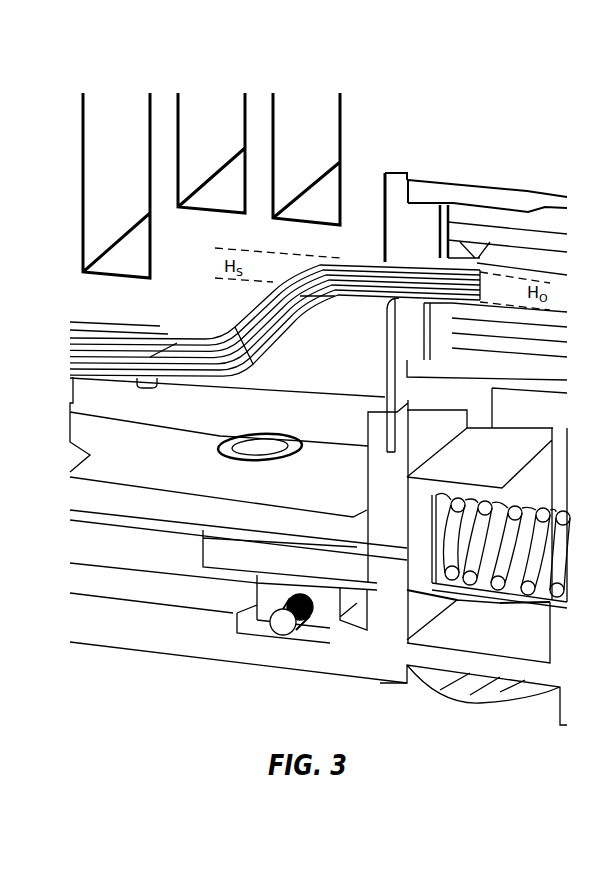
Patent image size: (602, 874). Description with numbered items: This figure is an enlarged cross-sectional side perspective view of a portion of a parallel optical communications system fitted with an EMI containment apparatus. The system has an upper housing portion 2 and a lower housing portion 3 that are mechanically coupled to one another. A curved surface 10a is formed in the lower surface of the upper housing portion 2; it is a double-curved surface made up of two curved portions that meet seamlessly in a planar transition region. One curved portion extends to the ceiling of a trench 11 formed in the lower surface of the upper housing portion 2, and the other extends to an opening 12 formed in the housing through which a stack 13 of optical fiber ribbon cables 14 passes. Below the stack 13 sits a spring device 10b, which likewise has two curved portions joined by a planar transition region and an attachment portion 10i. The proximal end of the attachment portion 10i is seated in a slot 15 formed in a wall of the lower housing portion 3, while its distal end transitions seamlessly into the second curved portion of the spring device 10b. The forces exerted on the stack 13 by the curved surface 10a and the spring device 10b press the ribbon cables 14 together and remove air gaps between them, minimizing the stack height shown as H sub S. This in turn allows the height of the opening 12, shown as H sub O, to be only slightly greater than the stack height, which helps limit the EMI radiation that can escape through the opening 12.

The upper housing portion 2 is at (170, 112).
The lower housing portion 3 is at (193, 632).
The curved surface 10a is at (240, 322).
The spring device 10b is at (275, 332).
The attachment portion 10i is at (388, 367).
The trench 11 is at (98, 400).
The opening 12 is at (410, 257).
The stack 13 is at (360, 282).
The optical fiber ribbon cables 14 is at (180, 367).
The slot 15 is at (385, 442).